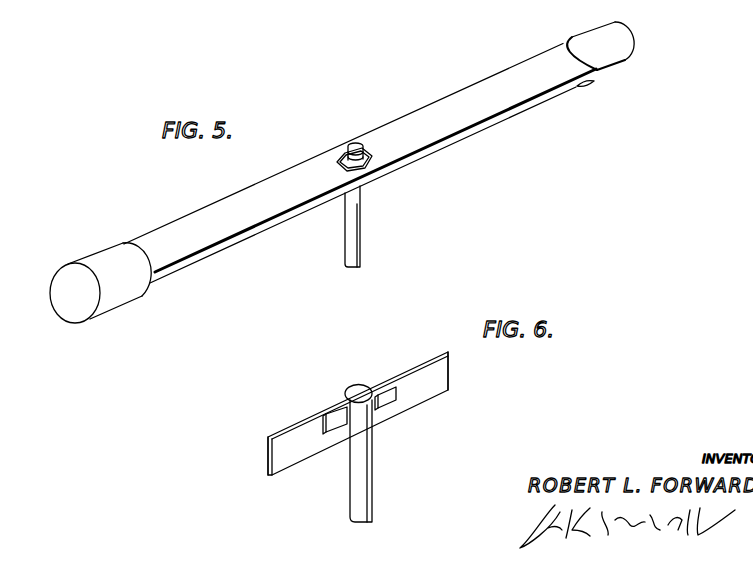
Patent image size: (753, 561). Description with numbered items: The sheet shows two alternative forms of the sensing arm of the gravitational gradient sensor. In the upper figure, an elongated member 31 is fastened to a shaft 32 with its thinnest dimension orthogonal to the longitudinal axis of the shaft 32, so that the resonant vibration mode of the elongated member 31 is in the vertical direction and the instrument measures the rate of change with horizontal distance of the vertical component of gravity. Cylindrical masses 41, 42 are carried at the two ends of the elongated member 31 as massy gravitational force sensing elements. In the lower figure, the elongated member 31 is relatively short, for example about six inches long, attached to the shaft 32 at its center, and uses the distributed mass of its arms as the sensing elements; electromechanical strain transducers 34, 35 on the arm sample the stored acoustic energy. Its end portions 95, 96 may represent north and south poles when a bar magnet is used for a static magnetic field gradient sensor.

In FIG. 5, the elongated member 31 is at (473, 107).
In FIG. 6, the elongated member 31 is at (432, 380).
In FIG. 5, the shaft 32 is at (350, 243).
In FIG. 6, the shaft 32 is at (353, 491).
In FIG. 6, the electromechanical strain transducer 34 is at (388, 390).
In FIG. 6, the electromechanical strain transducer 35 is at (328, 412).
In FIG. 5, the cylindrical mass 41 is at (616, 47).
In FIG. 5, the cylindrical mass 42 is at (78, 295).
In FIG. 6, the end portion 95 is at (449, 352).
In FIG. 6, the end portion 96 is at (268, 452).